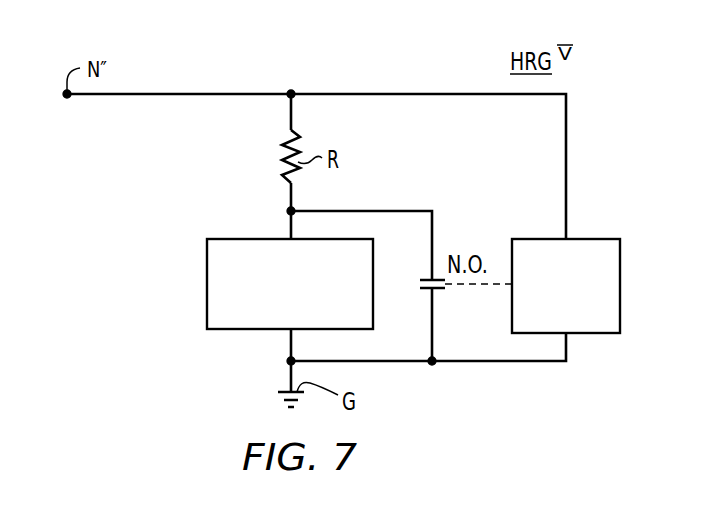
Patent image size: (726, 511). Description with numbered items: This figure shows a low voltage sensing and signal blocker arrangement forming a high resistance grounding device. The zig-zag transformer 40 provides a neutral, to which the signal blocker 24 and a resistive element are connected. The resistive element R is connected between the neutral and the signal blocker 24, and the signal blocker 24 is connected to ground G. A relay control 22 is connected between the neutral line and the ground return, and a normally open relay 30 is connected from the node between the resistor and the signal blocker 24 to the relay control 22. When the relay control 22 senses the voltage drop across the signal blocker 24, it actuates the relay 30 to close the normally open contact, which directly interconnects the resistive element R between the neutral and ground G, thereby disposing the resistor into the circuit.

The relay control 22 is at (594, 239).
The signal blocker system 24 is at (226, 330).
The relay 30 is at (418, 286).
The zig-zag transformer 40 is at (116, 228).